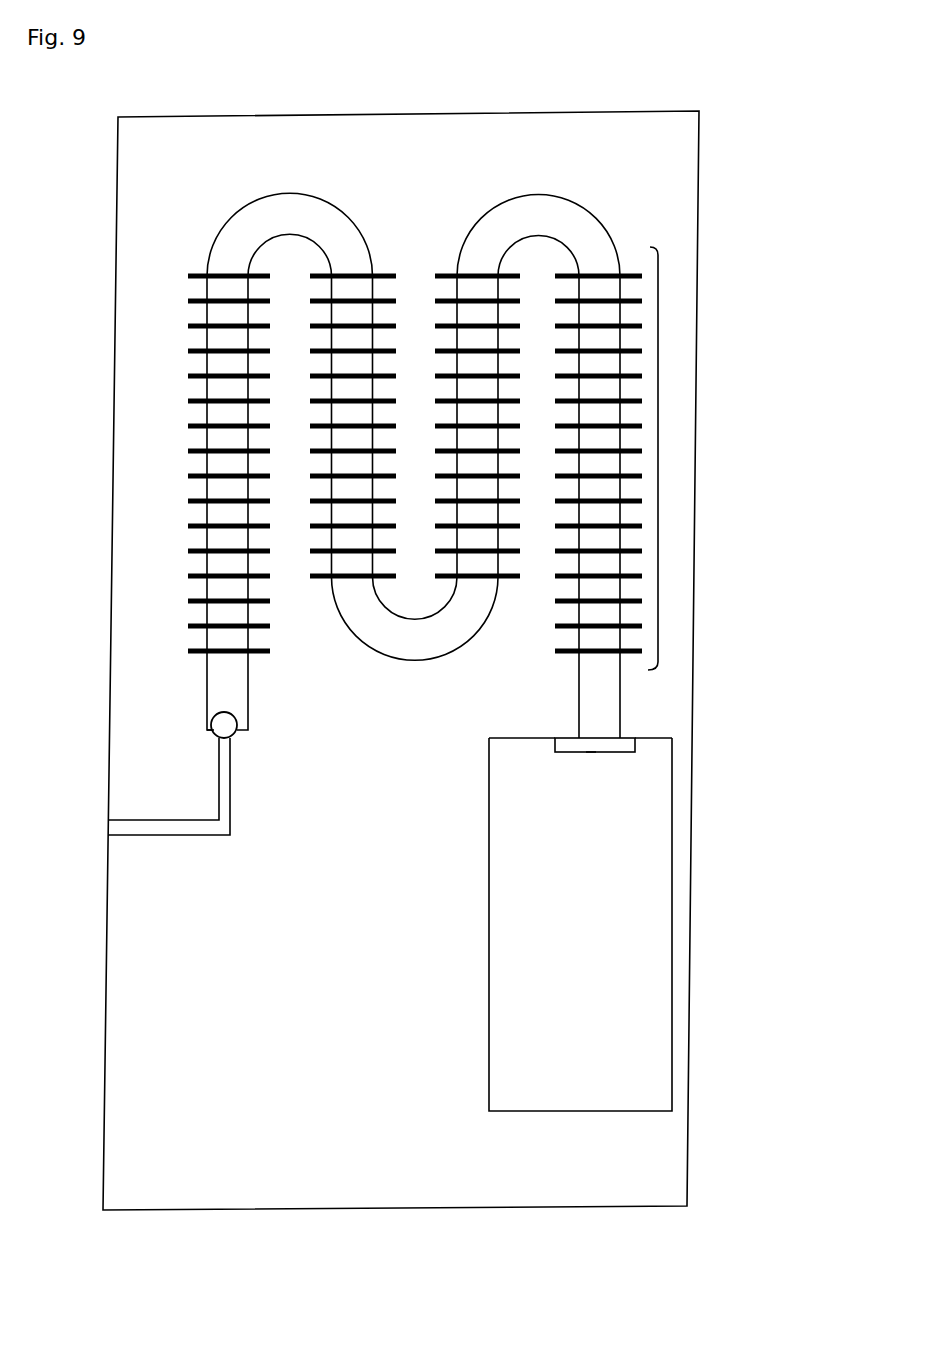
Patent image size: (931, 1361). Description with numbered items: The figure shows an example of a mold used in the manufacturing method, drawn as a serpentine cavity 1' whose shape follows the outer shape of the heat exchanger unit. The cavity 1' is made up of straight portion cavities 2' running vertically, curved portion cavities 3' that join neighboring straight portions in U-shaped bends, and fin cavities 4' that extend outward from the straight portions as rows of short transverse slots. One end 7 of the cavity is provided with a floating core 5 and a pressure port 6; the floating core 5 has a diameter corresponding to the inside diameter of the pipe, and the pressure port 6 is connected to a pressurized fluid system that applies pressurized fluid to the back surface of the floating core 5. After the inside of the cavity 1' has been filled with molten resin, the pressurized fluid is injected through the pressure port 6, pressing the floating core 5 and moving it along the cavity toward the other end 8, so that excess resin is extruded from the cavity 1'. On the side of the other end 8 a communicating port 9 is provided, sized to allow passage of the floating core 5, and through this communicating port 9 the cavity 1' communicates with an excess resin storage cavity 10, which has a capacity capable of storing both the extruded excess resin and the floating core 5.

The cavity 1' is at (725, 458).
The straight portion cavities 2' is at (200, 503).
The curved portion cavities 3' is at (291, 217).
The fin cavities 4' is at (583, 507).
The floating core 5 is at (213, 731).
The pressure port 6 is at (227, 792).
The end 7 is at (248, 727).
The other end 8 is at (610, 730).
The communicating port 9 is at (590, 753).
The excess resin storage cavity 10 is at (632, 903).